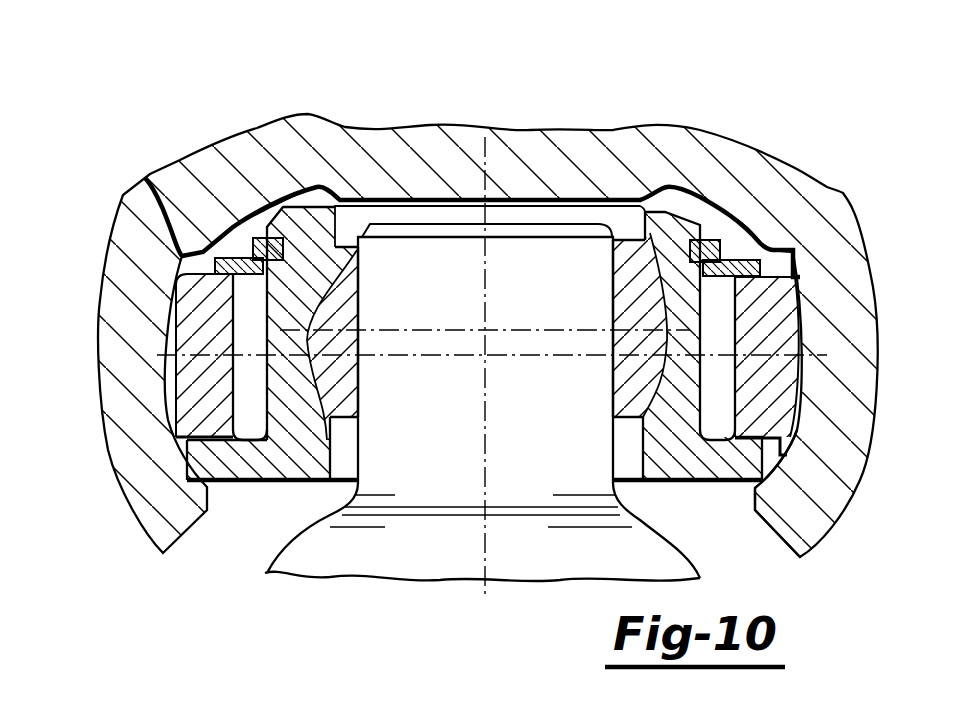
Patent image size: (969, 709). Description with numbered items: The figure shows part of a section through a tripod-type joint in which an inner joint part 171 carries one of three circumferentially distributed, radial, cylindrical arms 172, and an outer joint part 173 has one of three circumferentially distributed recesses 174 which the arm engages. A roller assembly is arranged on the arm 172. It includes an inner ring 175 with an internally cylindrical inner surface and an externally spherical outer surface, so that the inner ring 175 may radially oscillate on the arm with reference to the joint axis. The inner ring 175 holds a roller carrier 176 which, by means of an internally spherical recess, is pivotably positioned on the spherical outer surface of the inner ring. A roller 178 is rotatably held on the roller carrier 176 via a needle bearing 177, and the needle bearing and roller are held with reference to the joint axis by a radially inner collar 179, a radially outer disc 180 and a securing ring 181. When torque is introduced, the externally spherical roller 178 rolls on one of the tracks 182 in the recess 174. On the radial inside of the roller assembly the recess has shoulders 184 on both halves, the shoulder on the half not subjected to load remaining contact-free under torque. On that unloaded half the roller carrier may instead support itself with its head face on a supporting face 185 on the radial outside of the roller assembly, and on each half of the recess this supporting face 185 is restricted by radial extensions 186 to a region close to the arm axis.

The inner joint part 171 is at (372, 546).
The arm 172 is at (420, 450).
The outer joint part 173 is at (581, 164).
The recess 174 is at (226, 233).
The inner ring 175 is at (627, 384).
The roller carrier 176 is at (677, 431).
The needle bearing 177 is at (720, 410).
The roller 178 is at (763, 465).
The radially inner collar 179 is at (763, 402).
The radially outer disc 180 is at (752, 266).
The securing ring 181 is at (714, 243).
The track 182 is at (144, 176).
The shoulder 184 is at (235, 488).
The supporting face 185 is at (443, 210).
The radial extension 186 is at (303, 187).